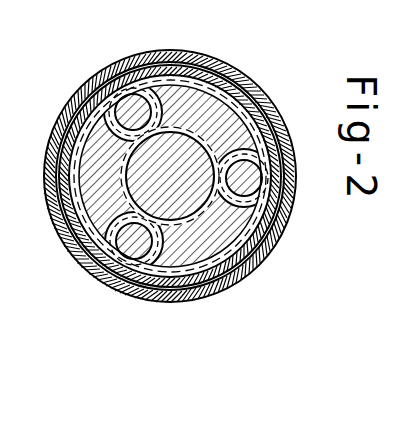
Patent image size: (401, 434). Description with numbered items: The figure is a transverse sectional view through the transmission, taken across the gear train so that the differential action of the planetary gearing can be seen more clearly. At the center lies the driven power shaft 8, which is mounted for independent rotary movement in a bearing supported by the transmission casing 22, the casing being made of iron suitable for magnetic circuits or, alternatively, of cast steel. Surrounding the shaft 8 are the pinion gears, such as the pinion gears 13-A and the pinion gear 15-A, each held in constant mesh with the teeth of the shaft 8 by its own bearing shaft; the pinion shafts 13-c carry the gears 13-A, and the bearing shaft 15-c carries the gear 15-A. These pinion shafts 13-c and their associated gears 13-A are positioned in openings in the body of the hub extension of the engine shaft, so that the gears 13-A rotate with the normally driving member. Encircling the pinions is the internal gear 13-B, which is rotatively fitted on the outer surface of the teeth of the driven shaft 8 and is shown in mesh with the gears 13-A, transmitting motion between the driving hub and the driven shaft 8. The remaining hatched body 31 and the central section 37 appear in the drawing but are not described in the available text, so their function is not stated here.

The power shaft 8 is at (228, 262).
The transmission casing 22 is at (193, 283).
The filler body 31 is at (90, 164).
The central core 37 is at (183, 193).
The pinion gear 15-A is at (122, 97).
The bearing shaft 15-c is at (82, 88).
The pinion gear 13-A is at (137, 238).
The internal gear 13-B is at (119, 239).
The bearing shaft 13-c is at (275, 231).